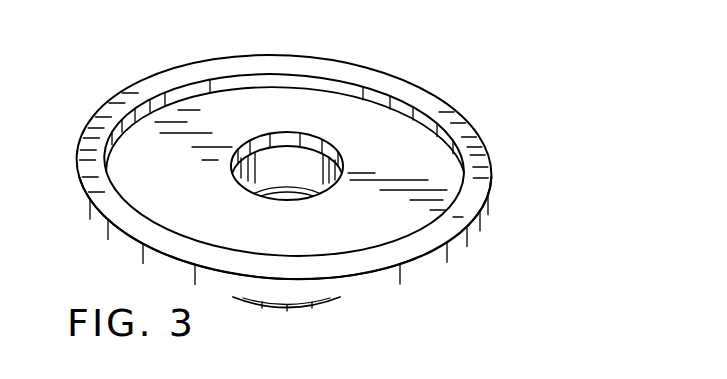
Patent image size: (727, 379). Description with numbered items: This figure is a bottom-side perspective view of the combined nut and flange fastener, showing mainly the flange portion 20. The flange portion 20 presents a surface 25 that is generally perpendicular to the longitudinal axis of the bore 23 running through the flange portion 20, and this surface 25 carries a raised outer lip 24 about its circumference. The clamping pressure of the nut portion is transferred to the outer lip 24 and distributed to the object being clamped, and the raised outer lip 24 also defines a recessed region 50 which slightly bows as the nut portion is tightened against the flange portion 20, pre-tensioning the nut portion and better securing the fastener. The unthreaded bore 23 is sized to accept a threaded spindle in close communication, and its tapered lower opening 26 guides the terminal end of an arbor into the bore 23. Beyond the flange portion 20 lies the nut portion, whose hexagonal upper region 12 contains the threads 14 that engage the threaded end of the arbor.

The flange portion 20 is at (455, 268).
The upper region 12 is at (305, 307).
The threads 14 is at (297, 186).
The bore 23 is at (260, 168).
The raised outer lip 24 is at (473, 133).
The surface 25 is at (397, 140).
The tapered lower opening 26 is at (282, 135).
The recessed region 50 is at (437, 183).